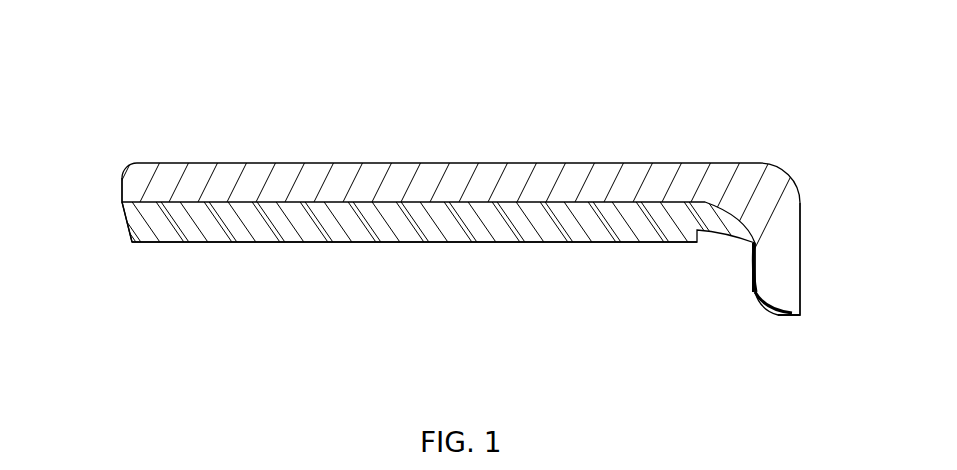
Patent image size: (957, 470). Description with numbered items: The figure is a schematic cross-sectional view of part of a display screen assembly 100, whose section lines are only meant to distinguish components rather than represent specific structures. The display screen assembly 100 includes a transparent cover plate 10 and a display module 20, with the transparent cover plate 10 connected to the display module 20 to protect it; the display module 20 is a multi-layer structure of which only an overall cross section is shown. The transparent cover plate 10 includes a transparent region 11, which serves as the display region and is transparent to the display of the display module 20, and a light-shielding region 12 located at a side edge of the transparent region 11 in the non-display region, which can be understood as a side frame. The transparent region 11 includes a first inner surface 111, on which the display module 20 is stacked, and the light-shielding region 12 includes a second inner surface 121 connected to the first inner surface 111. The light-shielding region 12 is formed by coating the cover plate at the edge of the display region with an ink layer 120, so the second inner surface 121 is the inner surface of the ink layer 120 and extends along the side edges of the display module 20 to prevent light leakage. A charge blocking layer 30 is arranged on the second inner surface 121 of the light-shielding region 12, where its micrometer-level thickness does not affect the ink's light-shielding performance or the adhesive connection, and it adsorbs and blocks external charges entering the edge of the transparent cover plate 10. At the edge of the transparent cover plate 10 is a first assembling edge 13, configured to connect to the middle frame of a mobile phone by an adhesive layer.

The display screen assembly 100 is at (507, 70).
The transparent region 11 is at (795, 132).
The first inner surface 111 is at (137, 222).
The transparent cover plate 10 is at (289, 197).
The display module 20 is at (192, 230).
The light-shielding region 12 is at (822, 242).
The first assembling edge 13 is at (793, 316).
The charge blocking layer 30 is at (755, 290).
The second inner surface 121 is at (755, 292).
The ink layer 120 is at (757, 296).